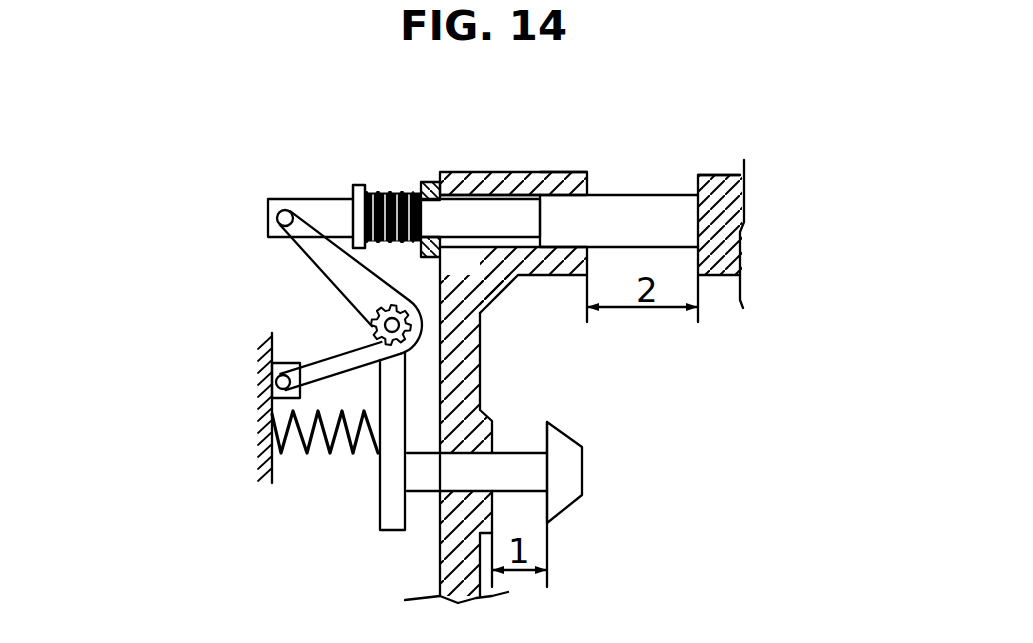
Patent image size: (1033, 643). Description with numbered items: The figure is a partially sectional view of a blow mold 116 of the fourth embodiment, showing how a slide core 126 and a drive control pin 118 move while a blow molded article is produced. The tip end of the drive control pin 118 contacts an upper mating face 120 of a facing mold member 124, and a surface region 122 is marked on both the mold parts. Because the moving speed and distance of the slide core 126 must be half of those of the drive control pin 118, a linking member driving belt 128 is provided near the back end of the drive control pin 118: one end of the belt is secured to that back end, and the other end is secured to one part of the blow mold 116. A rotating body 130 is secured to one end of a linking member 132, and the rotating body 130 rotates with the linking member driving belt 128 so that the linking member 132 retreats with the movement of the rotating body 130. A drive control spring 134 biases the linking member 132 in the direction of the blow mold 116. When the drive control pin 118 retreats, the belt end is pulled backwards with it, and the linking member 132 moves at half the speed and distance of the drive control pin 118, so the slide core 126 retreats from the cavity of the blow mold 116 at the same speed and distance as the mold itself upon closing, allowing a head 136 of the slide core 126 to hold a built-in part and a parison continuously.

The blow mold 116 is at (513, 197).
The drive control pin 118 is at (619, 152).
The upper mating face 120 is at (715, 189).
The bearing surface 122 is at (679, 117).
The facing mold member 124 is at (494, 430).
The slide core 126 is at (573, 475).
The linking member driving belt 128 is at (266, 300).
The rotating body 130 is at (260, 330).
The linking member 132 is at (327, 464).
The drive control spring 134 is at (251, 436).
The head 136 is at (642, 504).